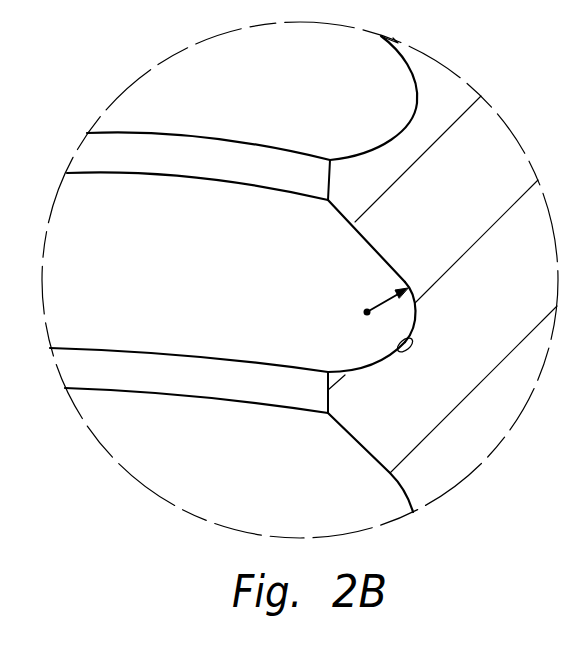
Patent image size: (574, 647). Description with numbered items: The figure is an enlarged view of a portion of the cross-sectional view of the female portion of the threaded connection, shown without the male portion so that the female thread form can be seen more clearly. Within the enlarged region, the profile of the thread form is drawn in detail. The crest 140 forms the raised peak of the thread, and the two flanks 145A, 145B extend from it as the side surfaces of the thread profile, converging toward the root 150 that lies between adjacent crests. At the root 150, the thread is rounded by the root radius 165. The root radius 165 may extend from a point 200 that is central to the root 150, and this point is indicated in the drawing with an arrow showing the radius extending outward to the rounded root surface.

The crest 140 is at (193, 148).
The flank 145A is at (372, 243).
The root 150 is at (417, 324).
The root radius 165 is at (406, 351).
The flank 145B is at (363, 373).
The point 200 is at (367, 312).